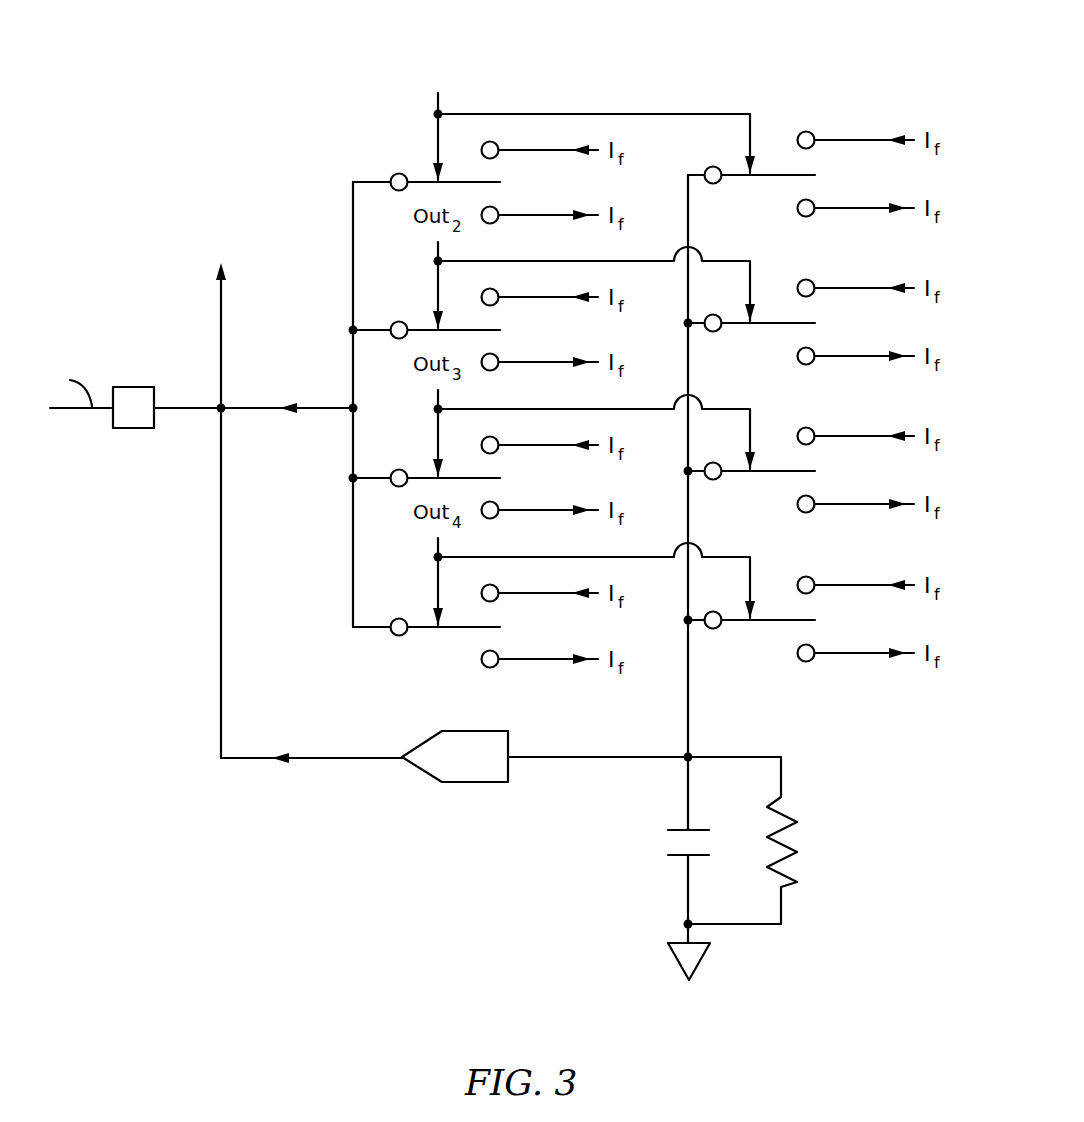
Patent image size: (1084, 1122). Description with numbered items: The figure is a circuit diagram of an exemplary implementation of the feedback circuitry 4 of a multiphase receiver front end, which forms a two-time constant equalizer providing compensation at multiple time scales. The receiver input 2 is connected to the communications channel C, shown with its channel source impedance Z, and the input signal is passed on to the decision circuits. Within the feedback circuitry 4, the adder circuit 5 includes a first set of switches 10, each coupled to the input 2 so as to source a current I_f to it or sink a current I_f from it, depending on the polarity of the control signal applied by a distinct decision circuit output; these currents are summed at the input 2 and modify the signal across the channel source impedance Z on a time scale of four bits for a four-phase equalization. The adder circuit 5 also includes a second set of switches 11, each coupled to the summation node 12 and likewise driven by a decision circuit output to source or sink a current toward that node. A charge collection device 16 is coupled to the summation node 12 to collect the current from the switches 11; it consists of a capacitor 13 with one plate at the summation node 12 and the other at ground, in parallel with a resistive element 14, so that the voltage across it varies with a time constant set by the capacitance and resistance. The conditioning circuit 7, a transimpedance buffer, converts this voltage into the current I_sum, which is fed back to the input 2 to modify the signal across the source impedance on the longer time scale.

The input 2 is at (165, 362).
The feedback circuitry 4 is at (231, 73).
The adder circuit 5 is at (737, 80).
The conditioning circuit 7 is at (493, 783).
The first set of switches 10 is at (424, 171).
The second set of switches 11 is at (731, 158).
The summation node 12 is at (655, 752).
The capacitor 13 is at (672, 866).
The resistive element 14 is at (803, 828).
The charge collection device 16 is at (793, 728).